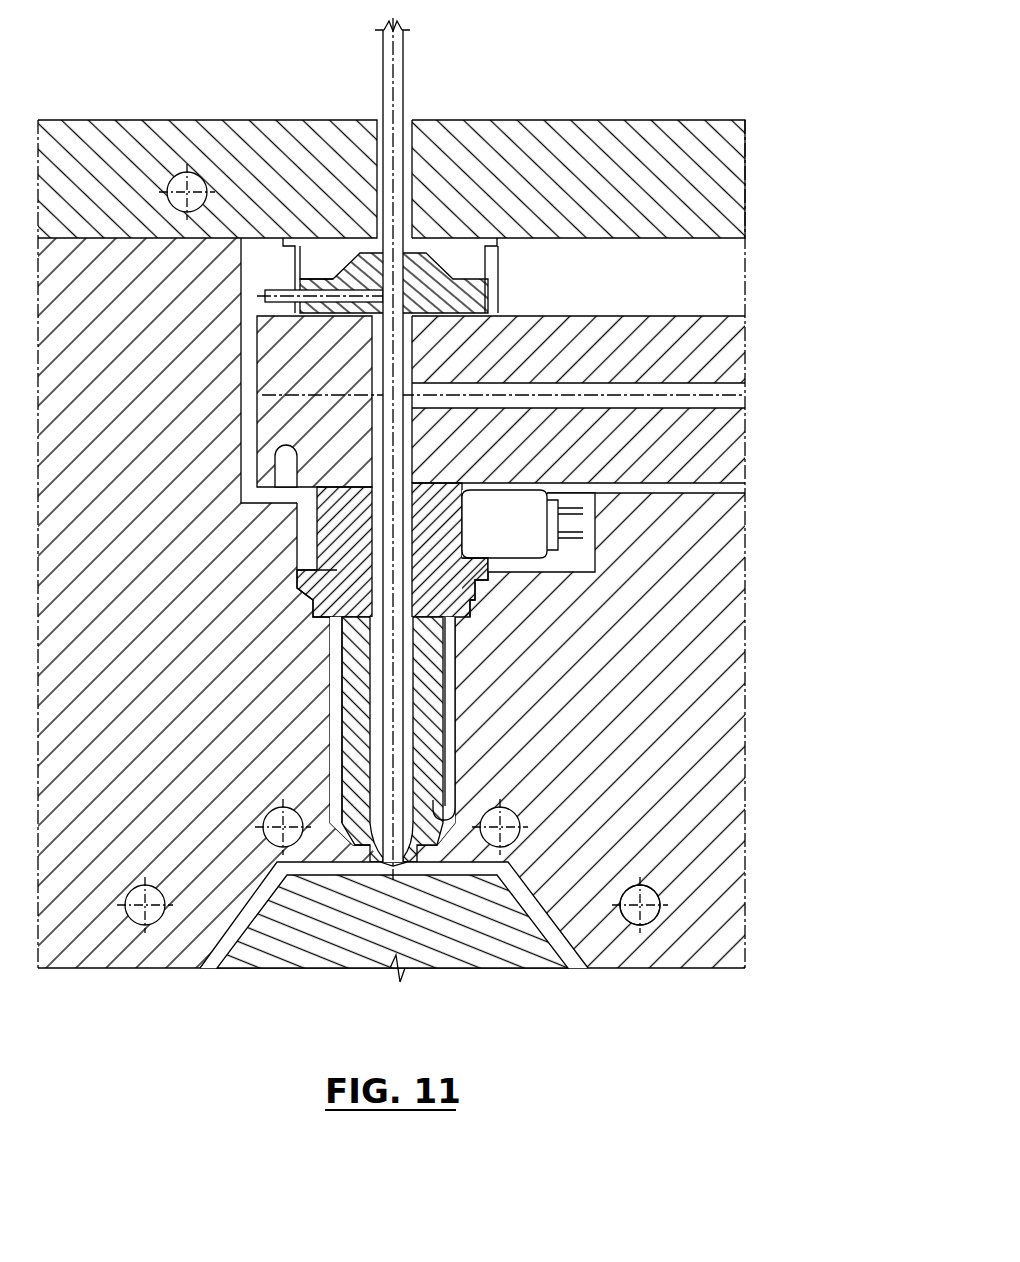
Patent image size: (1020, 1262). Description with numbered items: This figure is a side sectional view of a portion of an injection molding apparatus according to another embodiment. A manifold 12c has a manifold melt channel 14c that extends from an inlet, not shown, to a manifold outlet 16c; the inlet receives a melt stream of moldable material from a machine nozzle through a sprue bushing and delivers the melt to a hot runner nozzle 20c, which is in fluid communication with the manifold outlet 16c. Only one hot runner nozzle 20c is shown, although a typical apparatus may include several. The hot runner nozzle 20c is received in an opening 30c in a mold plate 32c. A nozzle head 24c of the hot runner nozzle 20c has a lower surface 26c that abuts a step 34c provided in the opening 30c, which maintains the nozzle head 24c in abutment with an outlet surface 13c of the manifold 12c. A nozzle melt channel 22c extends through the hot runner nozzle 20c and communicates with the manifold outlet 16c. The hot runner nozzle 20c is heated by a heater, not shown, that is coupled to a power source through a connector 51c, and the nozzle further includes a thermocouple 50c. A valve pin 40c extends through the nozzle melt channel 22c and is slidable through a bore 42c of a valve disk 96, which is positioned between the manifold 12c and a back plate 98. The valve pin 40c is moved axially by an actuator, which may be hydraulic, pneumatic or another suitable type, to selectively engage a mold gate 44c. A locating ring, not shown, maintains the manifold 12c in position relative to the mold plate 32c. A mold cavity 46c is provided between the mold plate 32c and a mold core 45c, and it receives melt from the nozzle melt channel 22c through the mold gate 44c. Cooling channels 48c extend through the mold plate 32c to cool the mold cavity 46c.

The valve pin 40c is at (395, 77).
The back plate 98 is at (705, 153).
The bore 42c is at (395, 268).
The valve disk 96 is at (470, 298).
The manifold 12c is at (705, 335).
The manifold melt channel 14c is at (725, 382).
The outlet surface 13c is at (715, 491).
The manifold outlet 16c is at (292, 508).
The connector 51c is at (535, 512).
The nozzle head 24c is at (312, 572).
The lower surface 26c is at (313, 626).
The step 34c is at (467, 601).
The hot runner nozzle 20c is at (346, 718).
The mold plate 32c is at (650, 690).
The nozzle melt channel 22c is at (330, 742).
The thermocouple 50c is at (460, 722).
The opening 30c is at (333, 787).
The cooling channels 48c is at (645, 893).
The mold core 45c is at (370, 935).
The mold gate 44c is at (398, 868).
The mold cavity 46c is at (201, 968).